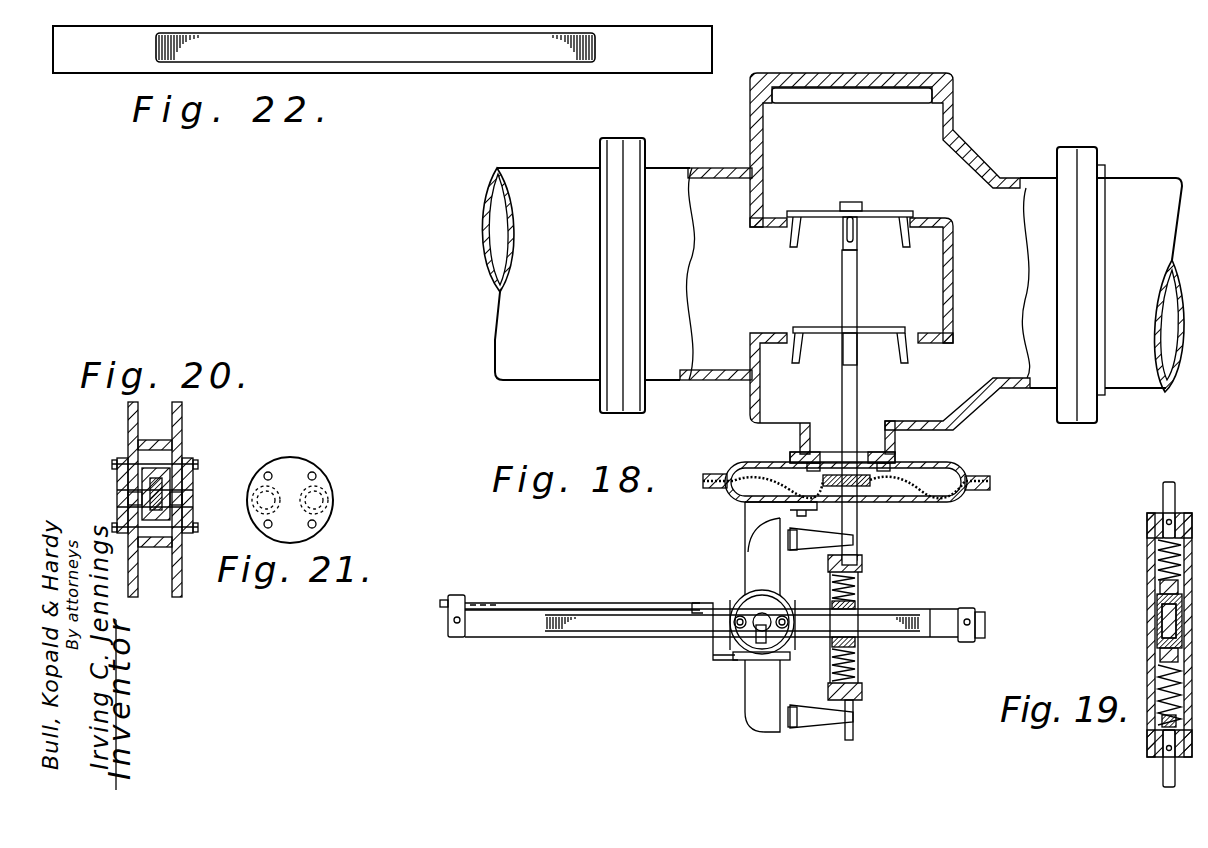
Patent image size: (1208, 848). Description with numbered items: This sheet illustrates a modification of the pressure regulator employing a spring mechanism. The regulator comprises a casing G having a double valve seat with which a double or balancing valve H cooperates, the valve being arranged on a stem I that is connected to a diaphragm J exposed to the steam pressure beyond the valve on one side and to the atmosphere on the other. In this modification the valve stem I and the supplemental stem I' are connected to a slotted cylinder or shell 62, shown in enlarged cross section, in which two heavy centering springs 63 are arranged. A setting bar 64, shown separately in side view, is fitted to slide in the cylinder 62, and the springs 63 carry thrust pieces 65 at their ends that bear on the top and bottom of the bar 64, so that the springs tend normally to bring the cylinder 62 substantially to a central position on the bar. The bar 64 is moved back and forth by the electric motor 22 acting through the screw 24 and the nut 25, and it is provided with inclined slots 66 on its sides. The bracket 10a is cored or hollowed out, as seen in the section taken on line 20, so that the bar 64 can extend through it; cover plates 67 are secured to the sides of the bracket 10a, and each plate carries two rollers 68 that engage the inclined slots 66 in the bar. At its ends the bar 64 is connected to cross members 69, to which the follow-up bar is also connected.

In FIG. 18, the casing G is at (996, 186).
In FIG. 18, the double or balancing valve H is at (840, 285).
In FIG. 18, the valve stem I is at (856, 405).
In FIG. 19, the valve stem I is at (1148, 508).
In FIG. 18, the supplemental stem I' is at (857, 724).
In FIG. 19, the supplemental stem I' is at (1142, 762).
In FIG. 18, the diaphragm J is at (944, 494).
In FIG. 18, the bracket 10a is at (748, 552).
In FIG. 20, the bracket 10a is at (182, 420).
In FIG. 18, the section line 20— 20 is at (762, 592).
In FIG. 18, the electric motor 22 is at (747, 637).
In FIG. 18, the screw 24 is at (515, 599).
In FIG. 18, the nut 25 is at (455, 594).
In FIG. 18, the slotted cylinder or shell 62 is at (862, 566).
In FIG. 19, the slotted cylinder or shell 62 is at (1148, 525).
In FIG. 18, the centering springs 63 is at (862, 589).
In FIG. 19, the centering springs 63 is at (1160, 578).
In FIG. 22, the setting bar 64 is at (653, 66).
In FIG. 18, the setting bar 64 is at (941, 600).
In FIG. 19, the setting bar 64 is at (1160, 618).
In FIG. 20, the setting bar 64 is at (157, 472).
In FIG. 18, the thrust pieces 65 is at (858, 604).
In FIG. 19, the thrust pieces 65 is at (1160, 590).
In FIG. 22, the inclined slots 66 is at (487, 52).
In FIG. 18, the inclined slots 66 is at (620, 622).
In FIG. 19, the inclined slots 66 is at (1150, 627).
In FIG. 20, the cover plates 67 is at (117, 463).
In FIG. 21, the cover plates 67 is at (302, 470).
In FIG. 20, the rollers 68 is at (140, 496).
In FIG. 21, the rollers 68 is at (326, 495).
In FIG. 18, the cross members 69 is at (460, 640).